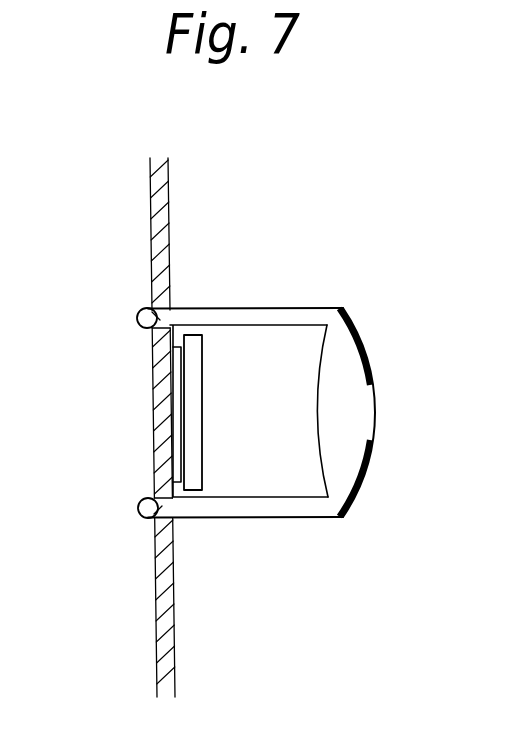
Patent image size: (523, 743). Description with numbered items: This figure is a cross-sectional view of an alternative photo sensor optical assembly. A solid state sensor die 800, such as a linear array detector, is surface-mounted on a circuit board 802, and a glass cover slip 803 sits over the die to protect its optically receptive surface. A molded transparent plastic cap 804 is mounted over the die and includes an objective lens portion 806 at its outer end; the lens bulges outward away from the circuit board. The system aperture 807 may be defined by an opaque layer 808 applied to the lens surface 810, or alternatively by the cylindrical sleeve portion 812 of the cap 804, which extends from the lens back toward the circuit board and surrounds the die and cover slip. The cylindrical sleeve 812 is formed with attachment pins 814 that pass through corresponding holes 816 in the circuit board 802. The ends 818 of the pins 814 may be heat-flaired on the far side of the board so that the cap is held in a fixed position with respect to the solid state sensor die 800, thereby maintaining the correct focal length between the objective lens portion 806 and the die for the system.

The solid state sensor die 800 is at (178, 338).
The circuit board 802 is at (165, 200).
The glass cover slip 803 is at (203, 335).
The molded transparent plastic cap 804 is at (360, 312).
The objective lens portion 806 is at (363, 425).
The system aperture 807 is at (375, 398).
The opaque layer 808 is at (370, 478).
The lens surface 810 is at (373, 422).
The cylindrical sleeve portion 812 is at (242, 522).
The attachment pins 814 is at (145, 520).
The holes 816 is at (156, 497).
The ends of the pins 818 is at (142, 509).